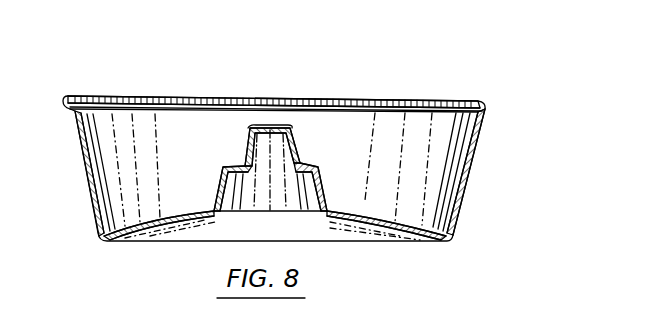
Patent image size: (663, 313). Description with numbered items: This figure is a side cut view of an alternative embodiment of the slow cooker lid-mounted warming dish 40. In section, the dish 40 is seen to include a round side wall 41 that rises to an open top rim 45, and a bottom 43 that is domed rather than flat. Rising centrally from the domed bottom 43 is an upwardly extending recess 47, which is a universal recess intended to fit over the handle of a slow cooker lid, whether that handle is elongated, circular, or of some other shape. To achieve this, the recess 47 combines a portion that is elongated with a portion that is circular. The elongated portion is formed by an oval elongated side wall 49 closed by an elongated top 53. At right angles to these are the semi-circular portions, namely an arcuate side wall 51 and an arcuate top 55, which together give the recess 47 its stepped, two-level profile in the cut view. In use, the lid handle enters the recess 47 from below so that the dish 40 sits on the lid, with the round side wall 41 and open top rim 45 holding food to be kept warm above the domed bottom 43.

The slow cooker lid-mounted warming dish 40 is at (493, 135).
The round side wall 41 is at (466, 173).
The domed bottom 43 is at (388, 240).
The open top rim 45 is at (361, 100).
The upwardly extending recess 47 is at (214, 168).
The elongated side wall 49 is at (244, 147).
The arcuate side wall 51 is at (222, 190).
The elongated top 53 is at (272, 125).
The arcuate top 55 is at (321, 180).